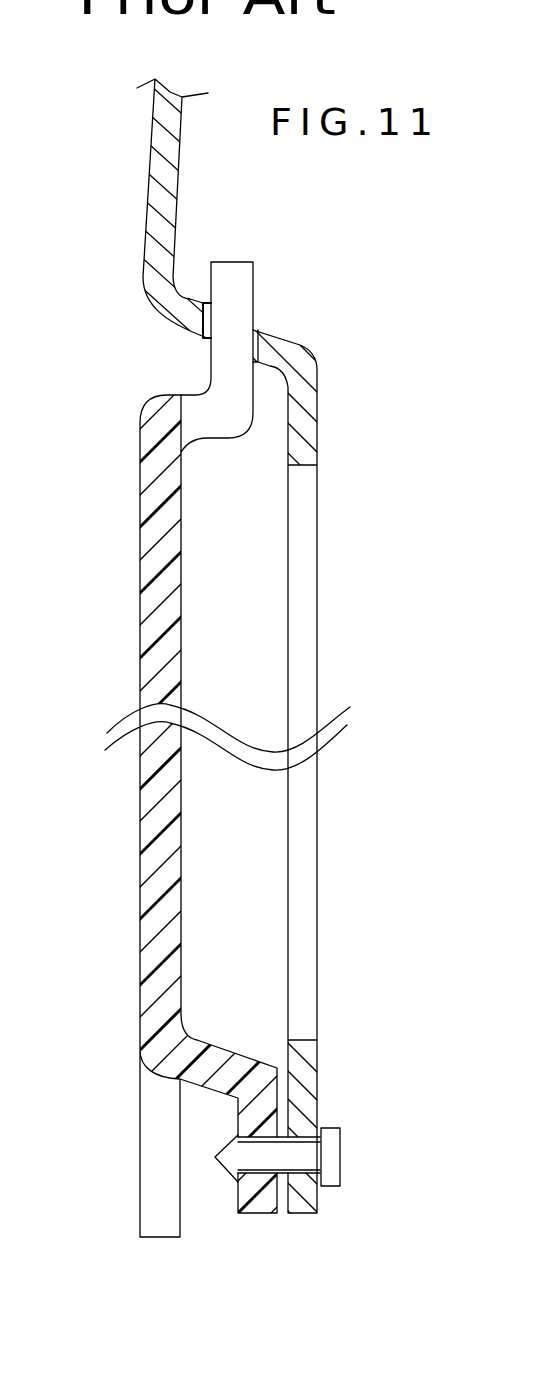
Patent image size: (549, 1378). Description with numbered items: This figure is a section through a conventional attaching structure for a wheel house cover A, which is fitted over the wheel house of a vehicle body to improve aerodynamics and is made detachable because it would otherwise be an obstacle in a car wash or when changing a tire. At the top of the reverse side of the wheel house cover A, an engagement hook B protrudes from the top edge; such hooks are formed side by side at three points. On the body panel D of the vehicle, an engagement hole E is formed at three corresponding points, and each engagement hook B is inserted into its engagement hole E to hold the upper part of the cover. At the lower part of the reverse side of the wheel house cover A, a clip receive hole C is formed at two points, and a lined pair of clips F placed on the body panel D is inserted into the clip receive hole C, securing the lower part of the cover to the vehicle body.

The wheel house cover A is at (140, 645).
The engagement hook B is at (254, 268).
The clip receive hole C is at (262, 1160).
The body panel D is at (148, 202).
The engagement hole E is at (211, 316).
The clip F is at (303, 1155).